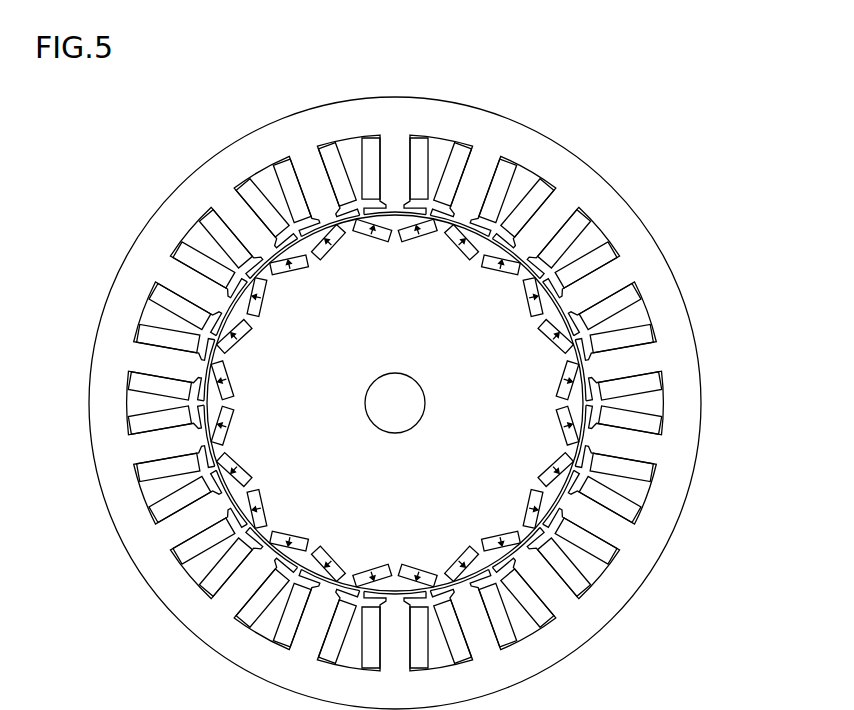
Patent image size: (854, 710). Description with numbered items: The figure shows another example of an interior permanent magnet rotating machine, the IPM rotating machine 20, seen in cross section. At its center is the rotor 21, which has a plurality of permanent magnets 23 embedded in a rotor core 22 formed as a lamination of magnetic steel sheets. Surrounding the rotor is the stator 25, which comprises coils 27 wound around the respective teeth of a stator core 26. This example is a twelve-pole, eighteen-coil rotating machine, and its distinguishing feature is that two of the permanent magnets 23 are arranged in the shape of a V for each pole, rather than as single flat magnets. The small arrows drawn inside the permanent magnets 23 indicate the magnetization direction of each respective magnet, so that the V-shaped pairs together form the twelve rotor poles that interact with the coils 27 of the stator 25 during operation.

The IPM rotating machine 20 is at (266, 103).
The rotor 21 is at (757, 313).
The rotor core 22 is at (545, 373).
The permanent magnets 23 is at (573, 359).
The stator 25 is at (628, 131).
The stator core 26 is at (585, 188).
The coils 27 is at (502, 178).